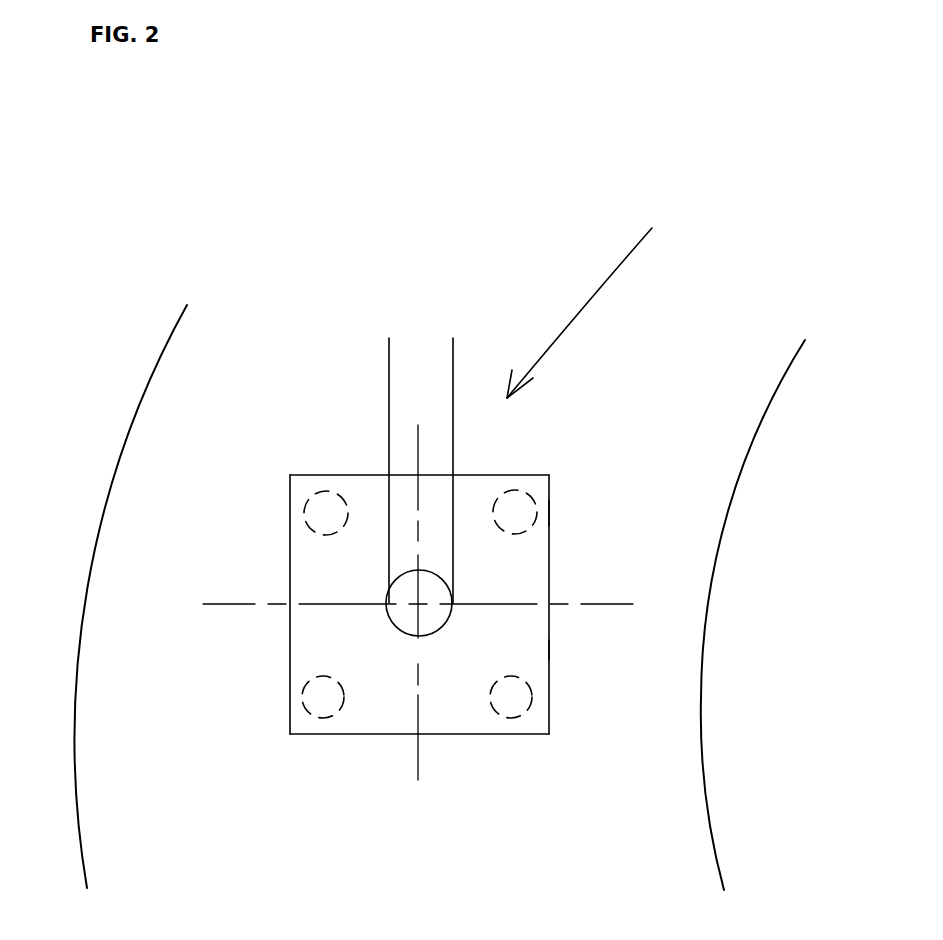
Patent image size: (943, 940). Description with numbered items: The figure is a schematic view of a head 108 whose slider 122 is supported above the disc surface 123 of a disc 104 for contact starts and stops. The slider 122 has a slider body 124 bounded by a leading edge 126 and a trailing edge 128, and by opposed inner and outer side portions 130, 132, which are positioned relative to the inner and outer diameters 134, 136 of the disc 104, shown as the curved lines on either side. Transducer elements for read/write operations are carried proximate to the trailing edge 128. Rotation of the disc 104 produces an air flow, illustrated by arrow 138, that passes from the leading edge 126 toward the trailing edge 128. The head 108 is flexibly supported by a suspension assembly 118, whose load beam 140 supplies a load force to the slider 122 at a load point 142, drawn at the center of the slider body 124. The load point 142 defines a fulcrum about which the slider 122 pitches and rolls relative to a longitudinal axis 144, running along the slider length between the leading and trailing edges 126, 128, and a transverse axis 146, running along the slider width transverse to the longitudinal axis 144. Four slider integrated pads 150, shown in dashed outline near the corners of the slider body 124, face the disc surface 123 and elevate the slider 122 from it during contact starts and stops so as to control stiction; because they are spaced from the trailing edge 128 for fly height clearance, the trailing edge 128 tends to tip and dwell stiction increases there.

The disc 104 is at (733, 503).
The head 108 is at (630, 428).
The suspension assembly 118 is at (453, 350).
The slider 122 is at (551, 513).
The disc surface 123 is at (237, 866).
The slider body 124 is at (550, 647).
The leading edge 126 is at (470, 475).
The trailing edge 128 is at (450, 734).
The inner side portion 130 is at (549, 553).
The outer side portion 132 is at (290, 575).
The inner diameter 134 is at (702, 698).
The outer diameter 136 is at (88, 588).
The arrow 138 is at (600, 273).
The load beam 140 is at (402, 367).
The load point 142 is at (447, 618).
The longitudinal axis 144 is at (418, 777).
The transverse axis 146 is at (595, 603).
The slider integrated pads 150 is at (325, 503).